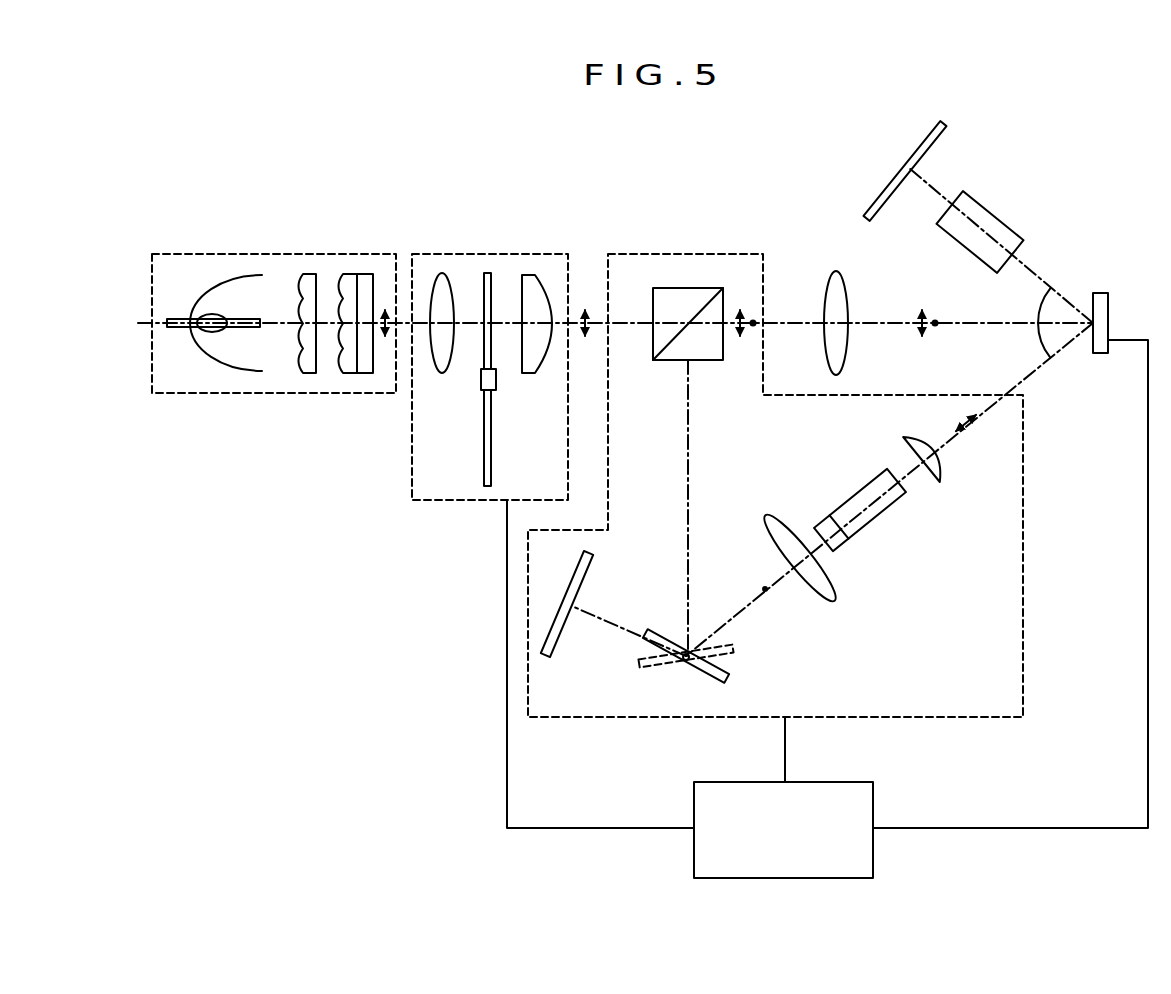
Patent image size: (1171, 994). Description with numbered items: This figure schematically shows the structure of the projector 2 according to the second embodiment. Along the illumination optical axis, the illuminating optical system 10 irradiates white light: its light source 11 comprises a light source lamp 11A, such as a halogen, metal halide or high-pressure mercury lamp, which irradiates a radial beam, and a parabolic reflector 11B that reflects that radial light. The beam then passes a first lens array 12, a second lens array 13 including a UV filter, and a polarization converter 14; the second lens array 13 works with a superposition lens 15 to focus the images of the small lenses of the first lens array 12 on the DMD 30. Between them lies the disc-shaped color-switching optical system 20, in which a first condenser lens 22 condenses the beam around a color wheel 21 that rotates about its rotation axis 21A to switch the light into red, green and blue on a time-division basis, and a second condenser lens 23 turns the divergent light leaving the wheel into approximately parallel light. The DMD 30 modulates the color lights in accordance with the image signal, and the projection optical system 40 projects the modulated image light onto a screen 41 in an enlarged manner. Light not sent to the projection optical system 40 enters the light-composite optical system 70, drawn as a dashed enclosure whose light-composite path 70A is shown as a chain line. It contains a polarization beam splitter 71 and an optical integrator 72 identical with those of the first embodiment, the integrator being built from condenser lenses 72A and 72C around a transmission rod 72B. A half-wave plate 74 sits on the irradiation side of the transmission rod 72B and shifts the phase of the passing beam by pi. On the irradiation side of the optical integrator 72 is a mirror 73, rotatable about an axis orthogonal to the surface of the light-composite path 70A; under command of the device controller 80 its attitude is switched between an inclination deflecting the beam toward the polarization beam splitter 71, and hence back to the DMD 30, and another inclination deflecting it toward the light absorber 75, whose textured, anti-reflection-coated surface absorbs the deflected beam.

The projector 2 is at (596, 181).
The illuminating optical system 10 is at (342, 254).
The light source 11 is at (222, 286).
The light source lamp 11A is at (236, 321).
The reflector 11B is at (243, 276).
The first lens array 12 is at (303, 366).
The second lens array 13 is at (346, 372).
The polarization converter 14 is at (365, 376).
The superposition lens 15 is at (847, 296).
The color-switching optical system 20 is at (470, 254).
The color wheel 21 is at (493, 460).
The rotation axis 21A is at (482, 386).
The first condenser lens 22 is at (440, 366).
The second condenser lens 23 is at (530, 372).
The DMD 30 is at (1109, 298).
The projection optical system 40 is at (1010, 222).
The screen 41 is at (945, 128).
The light-composite optical system 70 is at (1023, 470).
The light-composite path 70A is at (688, 440).
The polarization beam splitter 71 is at (652, 350).
The optical integrator 72 is at (1021, 533).
The lens 72A is at (945, 480).
The transmission rod 72B is at (882, 525).
The lens 72C is at (835, 590).
The mirror 73 is at (730, 677).
The half-wave plate 74 is at (826, 520).
The light absorber 75 is at (594, 562).
The device controller 80 is at (874, 795).